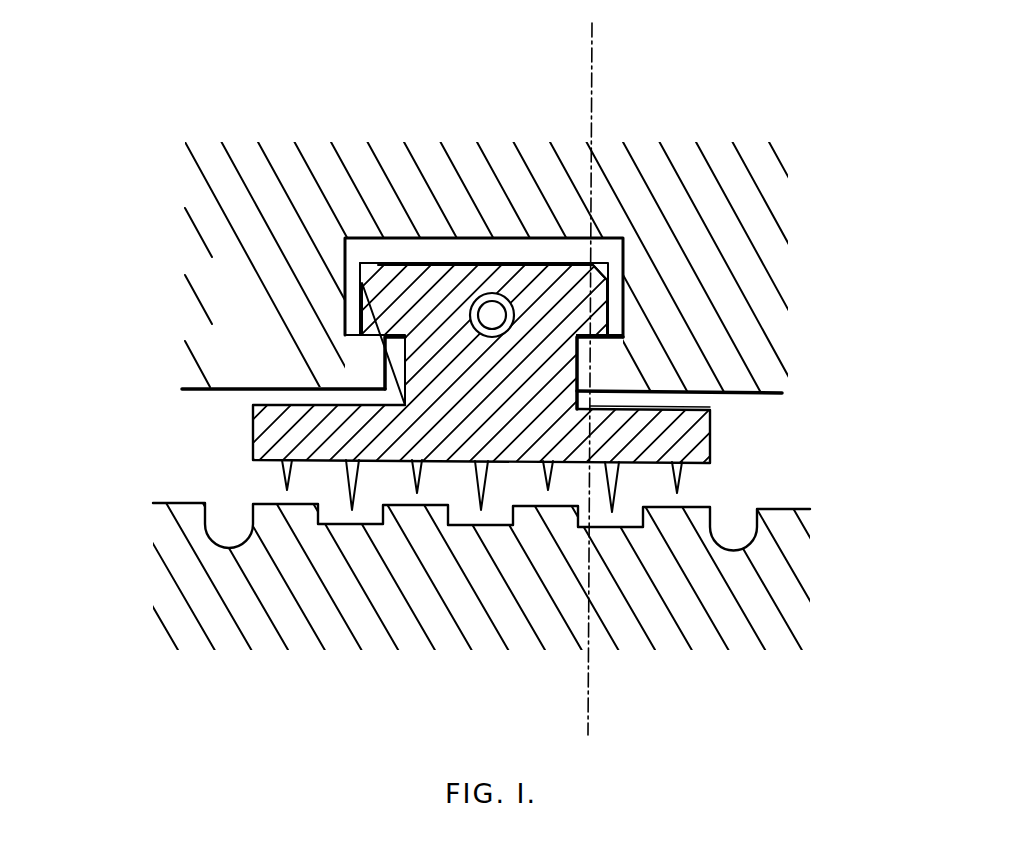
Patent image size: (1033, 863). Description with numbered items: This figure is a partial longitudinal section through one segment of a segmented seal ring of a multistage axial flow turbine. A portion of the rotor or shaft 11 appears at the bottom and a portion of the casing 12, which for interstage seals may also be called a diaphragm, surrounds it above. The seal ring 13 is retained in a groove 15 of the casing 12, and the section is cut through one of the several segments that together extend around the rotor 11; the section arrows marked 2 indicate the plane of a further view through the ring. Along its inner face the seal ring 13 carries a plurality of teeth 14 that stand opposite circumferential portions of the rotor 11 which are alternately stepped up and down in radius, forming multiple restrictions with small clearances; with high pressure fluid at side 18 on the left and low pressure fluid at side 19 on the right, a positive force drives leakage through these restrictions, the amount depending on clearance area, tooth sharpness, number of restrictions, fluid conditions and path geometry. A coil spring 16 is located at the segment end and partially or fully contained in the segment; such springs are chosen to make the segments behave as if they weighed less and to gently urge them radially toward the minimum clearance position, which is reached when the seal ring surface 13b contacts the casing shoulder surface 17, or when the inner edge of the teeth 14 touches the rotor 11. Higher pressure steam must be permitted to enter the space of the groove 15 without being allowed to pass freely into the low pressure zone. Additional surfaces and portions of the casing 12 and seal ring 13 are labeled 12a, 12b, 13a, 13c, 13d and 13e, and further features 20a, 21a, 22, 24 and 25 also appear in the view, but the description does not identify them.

The section line 2- 2 is at (592, 23).
The rotor 11 is at (178, 545).
The casing 12 is at (732, 173).
The cavity side surface 12a is at (375, 375).
The cavity bottom surface 12b is at (730, 392).
The seal ring 13 is at (711, 434).
The insert side wall 13a is at (603, 297).
The seal ring surface 13b is at (612, 355).
The insert stem 13c is at (492, 363).
The insert base flange 13d is at (290, 438).
The insert corner edge 13e is at (573, 340).
The teeth 14 is at (613, 490).
The groove 15 is at (350, 308).
The coil springs 16 is at (493, 298).
The casing shoulder surface 17 is at (620, 365).
The high pressure side 18 is at (197, 483).
The low pressure side 19 is at (773, 488).
The left retaining member 20a is at (378, 386).
The retaining plate 21a is at (262, 384).
The retainer top plate 22 is at (470, 300).
The plate edge 24 is at (283, 397).
The right retaining plate 25 is at (710, 400).